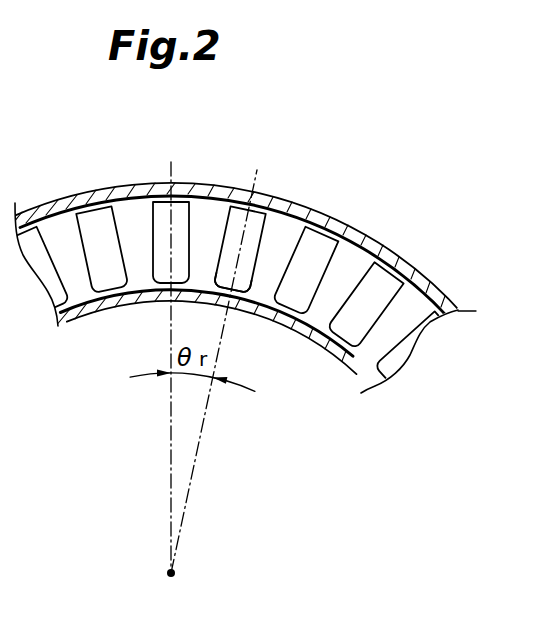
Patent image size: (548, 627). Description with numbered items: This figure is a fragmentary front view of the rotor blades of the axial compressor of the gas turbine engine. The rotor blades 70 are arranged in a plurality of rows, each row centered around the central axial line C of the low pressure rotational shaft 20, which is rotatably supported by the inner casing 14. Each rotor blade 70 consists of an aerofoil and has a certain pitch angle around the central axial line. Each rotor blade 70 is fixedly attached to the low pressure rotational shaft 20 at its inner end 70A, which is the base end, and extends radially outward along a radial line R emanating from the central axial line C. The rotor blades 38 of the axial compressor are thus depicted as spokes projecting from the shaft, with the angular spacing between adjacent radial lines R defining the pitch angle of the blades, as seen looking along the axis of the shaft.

The inner casing 14 is at (348, 233).
The rotor blades 38 is at (294, 203).
The low pressure rotational shaft 20 is at (318, 325).
The rotor blade 70 is at (174, 208).
The inner end of the rotor blade 70A is at (236, 281).
The radial line R is at (171, 449).
The central axial line C is at (172, 591).